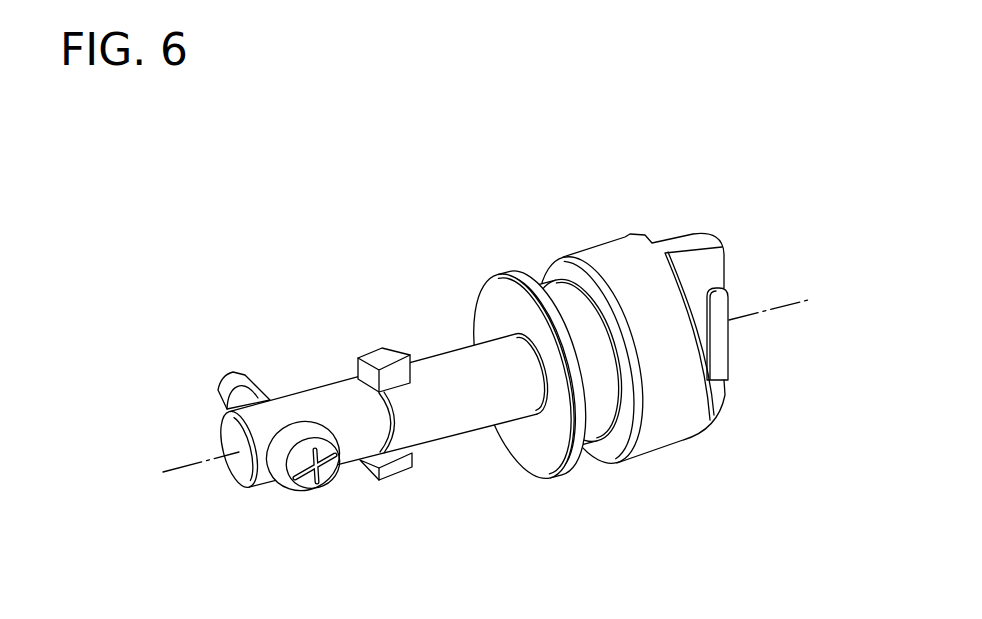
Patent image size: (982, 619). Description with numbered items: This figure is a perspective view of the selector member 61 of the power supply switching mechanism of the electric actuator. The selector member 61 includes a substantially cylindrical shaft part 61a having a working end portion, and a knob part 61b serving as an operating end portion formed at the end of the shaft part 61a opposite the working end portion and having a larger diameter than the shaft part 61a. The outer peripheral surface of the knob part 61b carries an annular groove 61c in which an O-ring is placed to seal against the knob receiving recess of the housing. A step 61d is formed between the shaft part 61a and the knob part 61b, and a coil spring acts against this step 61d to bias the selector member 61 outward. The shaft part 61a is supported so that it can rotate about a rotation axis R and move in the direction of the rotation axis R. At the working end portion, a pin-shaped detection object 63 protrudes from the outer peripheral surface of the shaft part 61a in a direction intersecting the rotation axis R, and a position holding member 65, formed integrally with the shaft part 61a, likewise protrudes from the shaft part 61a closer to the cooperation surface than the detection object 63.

The selector member 61 is at (487, 316).
The shaft part 61a is at (467, 411).
The knob part 61b is at (672, 420).
The annular groove 61c is at (595, 332).
The step 61d is at (492, 308).
The detection object 63 is at (258, 392).
The position holding member 65 is at (395, 467).
The rotation axis R is at (785, 301).